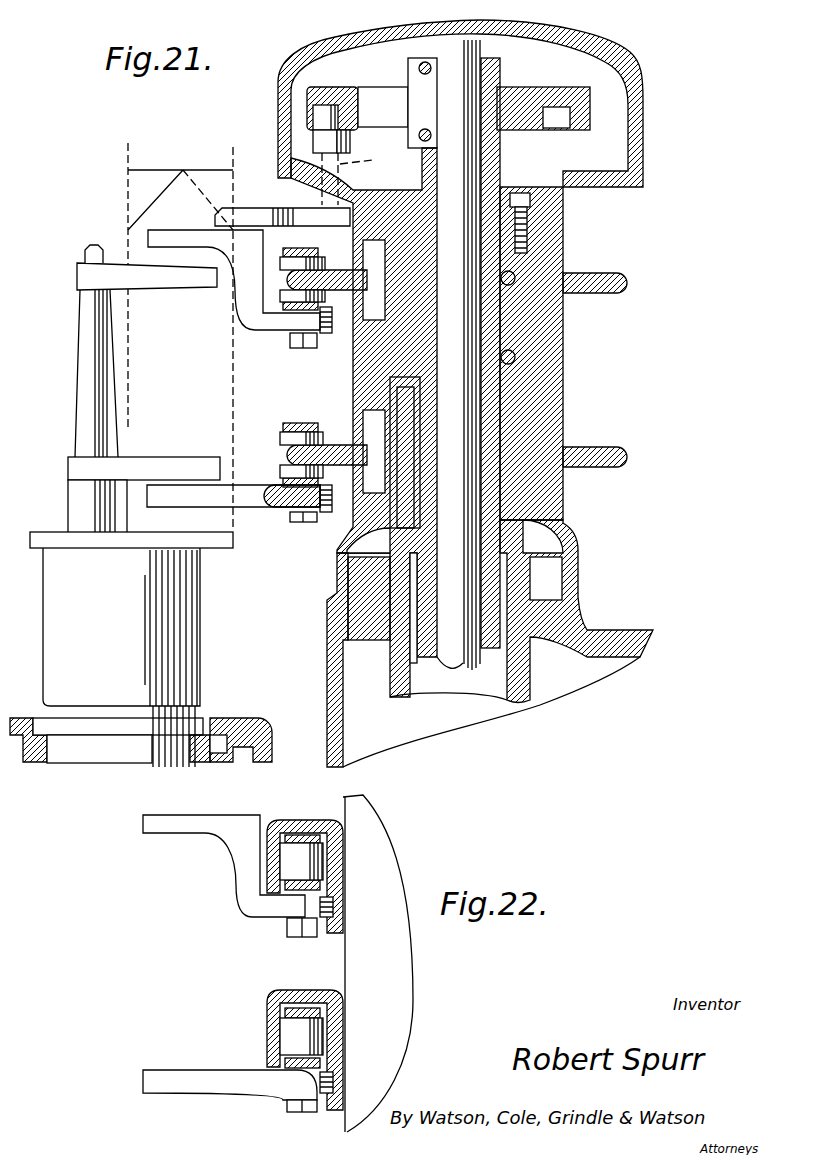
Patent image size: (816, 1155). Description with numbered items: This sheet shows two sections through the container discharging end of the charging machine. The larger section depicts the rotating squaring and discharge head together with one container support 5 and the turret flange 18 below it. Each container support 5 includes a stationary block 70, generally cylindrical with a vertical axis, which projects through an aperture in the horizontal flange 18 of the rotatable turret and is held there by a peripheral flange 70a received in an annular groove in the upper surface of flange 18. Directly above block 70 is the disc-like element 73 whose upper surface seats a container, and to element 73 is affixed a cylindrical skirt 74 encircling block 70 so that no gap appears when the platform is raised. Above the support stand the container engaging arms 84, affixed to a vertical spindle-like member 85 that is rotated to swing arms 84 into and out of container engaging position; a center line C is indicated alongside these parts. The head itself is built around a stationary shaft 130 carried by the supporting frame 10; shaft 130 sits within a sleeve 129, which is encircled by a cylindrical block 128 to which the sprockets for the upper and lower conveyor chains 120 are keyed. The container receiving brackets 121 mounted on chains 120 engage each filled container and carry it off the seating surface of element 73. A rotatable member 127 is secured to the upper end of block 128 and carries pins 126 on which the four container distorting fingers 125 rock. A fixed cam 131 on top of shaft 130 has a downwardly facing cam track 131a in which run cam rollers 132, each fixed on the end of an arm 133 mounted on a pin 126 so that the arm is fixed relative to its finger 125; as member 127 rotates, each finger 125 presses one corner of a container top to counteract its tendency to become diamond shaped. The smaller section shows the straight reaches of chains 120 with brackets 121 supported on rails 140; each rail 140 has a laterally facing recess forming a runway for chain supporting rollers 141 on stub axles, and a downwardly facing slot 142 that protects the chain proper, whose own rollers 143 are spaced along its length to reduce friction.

In FIG. 21, the insulator assembly 5 is at (30, 549).
In FIG. 21, the supporting frame 10 is at (604, 641).
In FIG. 21, the horizontal flange portion of the rotatable turret 18 is at (243, 690).
In FIG. 21, the stationary block 70 is at (123, 713).
In FIG. 21, the peripheral flange 70a is at (82, 728).
In FIG. 21, the disc-like element 73 is at (213, 544).
In FIG. 21, the cylindrical skirt 74 is at (190, 661).
In FIG. 21, the container engaging arms 84 is at (165, 280).
In FIG. 21, the vertical spindle-like member 85 is at (88, 343).
In FIG. 21, the conveyor chains 120 is at (320, 256).
In FIG. 22, the conveyor chains 120 is at (337, 880).
In FIG. 21, the container receiving brackets 121 is at (243, 311).
In FIG. 22, the container receiving brackets 121 is at (233, 888).
In FIG. 21, the container distorting fingers 125 is at (260, 217).
In FIG. 21, the pin 126 is at (374, 159).
In FIG. 21, the rotatable member 127 is at (612, 192).
In FIG. 21, the cylindrical block 128 is at (533, 311).
In FIG. 21, the sleeve 129 is at (488, 340).
In FIG. 21, the stationary shaft 130 is at (464, 510).
In FIG. 21, the fixed cam 131 is at (590, 98).
In FIG. 21, the cam track 131a is at (557, 118).
In FIG. 21, the cam rollers 132 is at (313, 116).
In FIG. 21, the arm 133 is at (313, 143).
In FIG. 22, the rails 140 is at (293, 823).
In FIG. 21, the chain supporting rollers 141 is at (328, 338).
In FIG. 22, the chain supporting rollers 141 is at (337, 910).
In FIG. 22, the downwardly facing slot 142 is at (277, 840).
In FIG. 21, the chain rollers 143 is at (281, 294).
In FIG. 22, the chain rollers 143 is at (315, 860).
In FIG. 21, the center line C is at (128, 237).